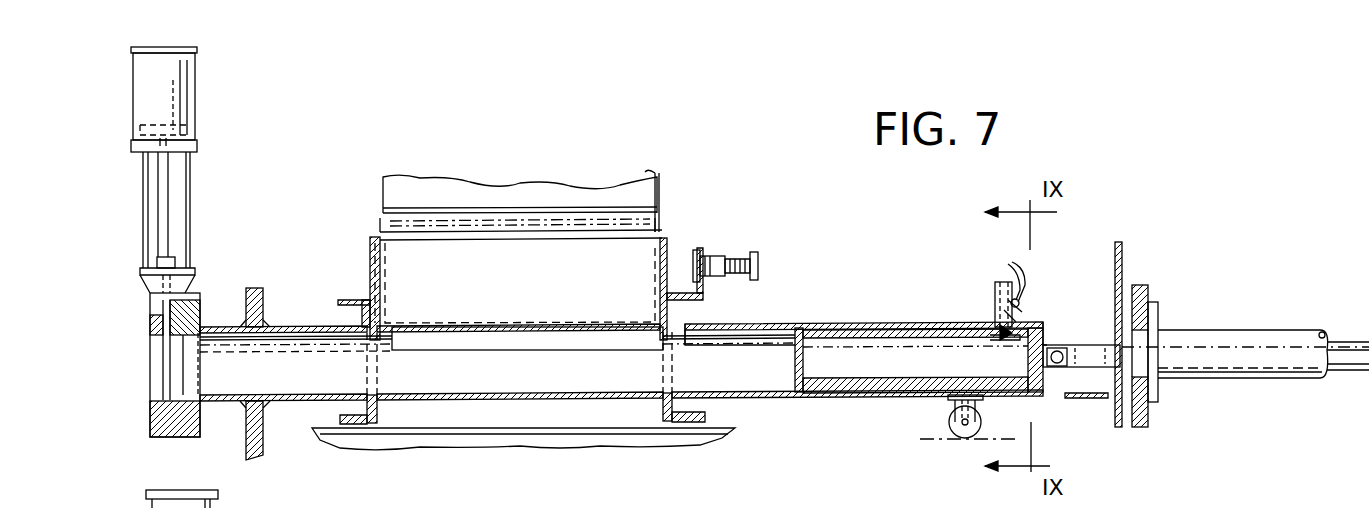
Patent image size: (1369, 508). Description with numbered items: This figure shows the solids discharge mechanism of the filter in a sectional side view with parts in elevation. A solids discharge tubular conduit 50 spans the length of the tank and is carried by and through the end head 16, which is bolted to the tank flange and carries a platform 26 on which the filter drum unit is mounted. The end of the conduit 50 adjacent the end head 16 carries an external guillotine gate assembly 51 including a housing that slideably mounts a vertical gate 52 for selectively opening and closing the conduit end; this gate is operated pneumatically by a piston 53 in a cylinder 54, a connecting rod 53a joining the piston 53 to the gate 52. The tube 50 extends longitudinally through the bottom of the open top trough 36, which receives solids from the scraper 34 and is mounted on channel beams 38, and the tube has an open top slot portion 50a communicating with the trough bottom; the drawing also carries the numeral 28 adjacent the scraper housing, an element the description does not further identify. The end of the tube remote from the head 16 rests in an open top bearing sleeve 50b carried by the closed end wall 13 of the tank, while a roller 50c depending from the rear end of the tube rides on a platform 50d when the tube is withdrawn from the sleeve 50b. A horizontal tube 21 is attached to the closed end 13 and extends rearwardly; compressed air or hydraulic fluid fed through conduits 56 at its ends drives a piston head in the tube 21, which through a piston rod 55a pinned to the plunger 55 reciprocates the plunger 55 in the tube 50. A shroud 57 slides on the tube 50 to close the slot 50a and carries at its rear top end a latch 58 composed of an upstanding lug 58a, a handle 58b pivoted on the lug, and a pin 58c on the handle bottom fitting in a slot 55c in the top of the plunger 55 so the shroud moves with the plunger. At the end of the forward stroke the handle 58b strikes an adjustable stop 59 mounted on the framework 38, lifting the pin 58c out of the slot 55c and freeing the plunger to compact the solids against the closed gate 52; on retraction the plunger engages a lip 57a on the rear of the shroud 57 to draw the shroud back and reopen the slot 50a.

The closed end 13 is at (1122, 268).
The end head 16 is at (252, 292).
The horizontal tube 21 is at (1245, 332).
The platform 26 is at (585, 447).
The motor housing wall 28 is at (653, 180).
The scraper 34 is at (560, 200).
The open top trough 36 is at (667, 245).
The channel beams 38 is at (356, 300).
The solids discharge tubular conduit 50 is at (282, 405).
The open top slot portion 50a is at (690, 325).
The open top bearing sleeve 50b is at (1090, 400).
The roller 50c is at (948, 420).
The platform 50d is at (958, 440).
The guillotine gate assembly 51 is at (160, 416).
The vertical gate 52 is at (150, 328).
The piston 53 is at (185, 120).
The connecting rod 53a is at (168, 212).
The cylinder 54 is at (178, 88).
The plunger 55 is at (885, 330).
The piston rod 55a is at (1100, 352).
The slot 55c is at (985, 325).
The conduits 56 is at (1158, 325).
The shroud 57 is at (818, 323).
The lip 57a is at (1045, 322).
The latch 58 is at (995, 288).
The upstanding lug 58a is at (1000, 300).
The handle 58b is at (1012, 262).
The pin 58c is at (998, 340).
The adjustable stop 59 is at (760, 265).